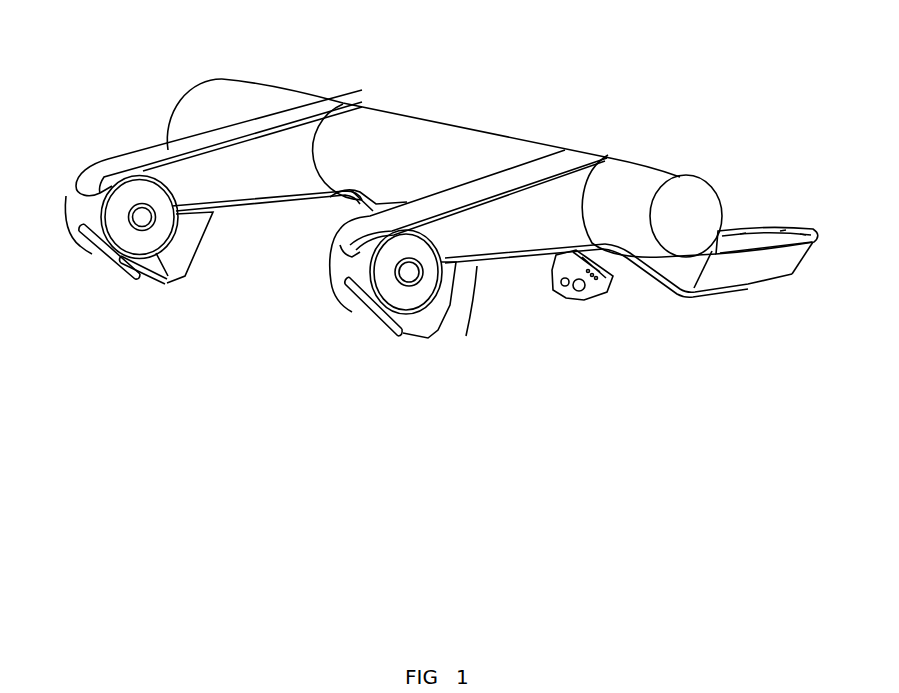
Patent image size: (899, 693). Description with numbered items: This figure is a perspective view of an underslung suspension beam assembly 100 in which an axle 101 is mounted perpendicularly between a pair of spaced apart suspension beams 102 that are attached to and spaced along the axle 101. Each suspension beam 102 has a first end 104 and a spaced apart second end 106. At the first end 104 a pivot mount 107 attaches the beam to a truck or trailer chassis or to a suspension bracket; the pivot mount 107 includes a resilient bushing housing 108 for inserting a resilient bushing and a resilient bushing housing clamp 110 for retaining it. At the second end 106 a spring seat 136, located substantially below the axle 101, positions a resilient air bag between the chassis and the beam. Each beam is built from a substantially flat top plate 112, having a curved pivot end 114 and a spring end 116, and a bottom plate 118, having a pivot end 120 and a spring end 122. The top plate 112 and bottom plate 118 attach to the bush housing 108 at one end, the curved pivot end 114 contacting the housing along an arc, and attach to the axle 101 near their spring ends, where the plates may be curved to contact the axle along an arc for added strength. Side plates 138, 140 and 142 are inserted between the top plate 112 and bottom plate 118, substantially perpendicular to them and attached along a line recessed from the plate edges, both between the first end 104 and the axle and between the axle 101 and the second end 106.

The suspension beam assembly 100 is at (237, 390).
The axle 101 is at (460, 128).
The suspension beam 102 is at (289, 207).
The first end 104 is at (342, 297).
The second end 106 is at (797, 268).
The pivot mount 107 is at (402, 285).
The resilient bushing housing 108 is at (351, 265).
The resilient bushing housing clamp 110 is at (430, 337).
The top plate 112 is at (170, 153).
The pivot end 114 is at (103, 176).
The spring end 116 is at (760, 250).
The bottom plate 118 is at (650, 276).
The pivot end 120 is at (451, 258).
The spring end 122 is at (720, 290).
The spring seat 136 is at (773, 231).
The side plate 138 is at (493, 236).
The side plate 140 is at (710, 271).
The side plate 142 is at (286, 167).